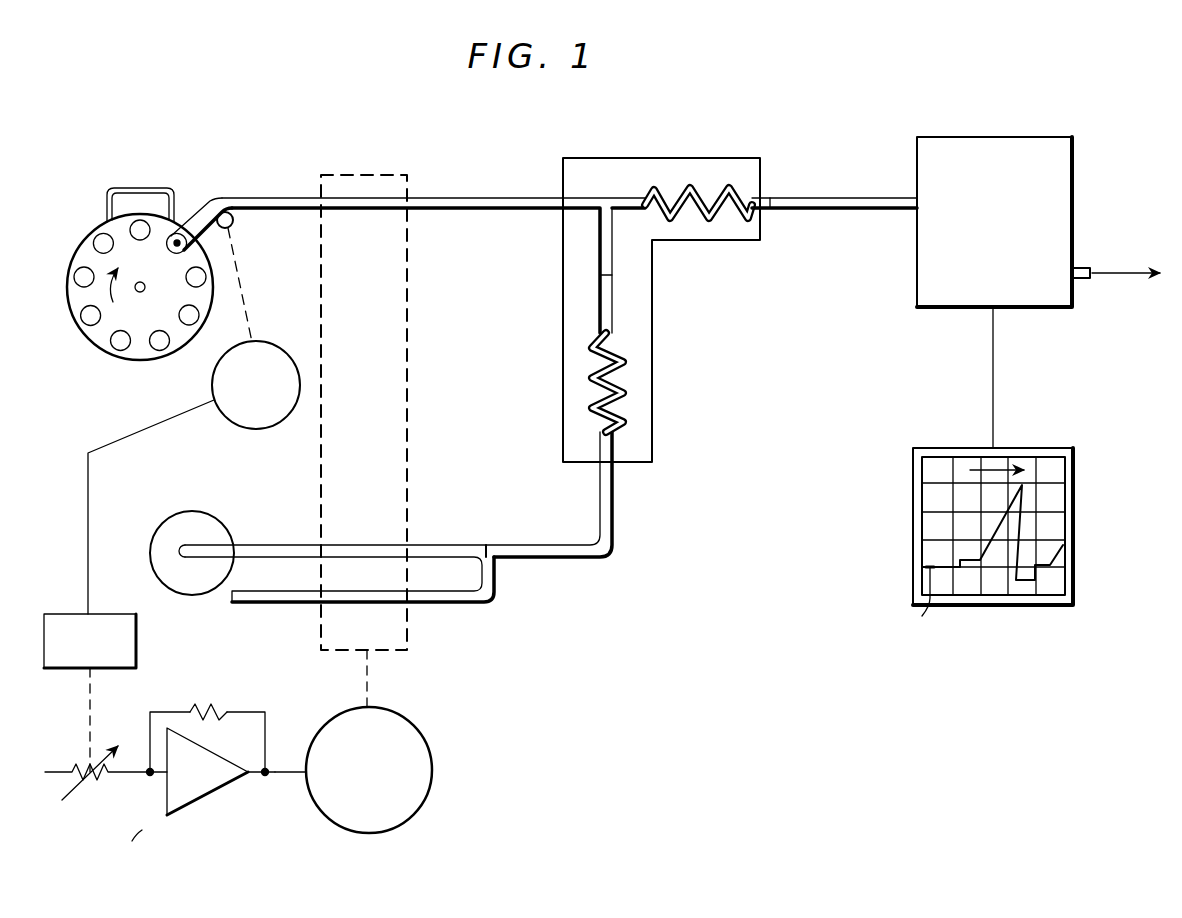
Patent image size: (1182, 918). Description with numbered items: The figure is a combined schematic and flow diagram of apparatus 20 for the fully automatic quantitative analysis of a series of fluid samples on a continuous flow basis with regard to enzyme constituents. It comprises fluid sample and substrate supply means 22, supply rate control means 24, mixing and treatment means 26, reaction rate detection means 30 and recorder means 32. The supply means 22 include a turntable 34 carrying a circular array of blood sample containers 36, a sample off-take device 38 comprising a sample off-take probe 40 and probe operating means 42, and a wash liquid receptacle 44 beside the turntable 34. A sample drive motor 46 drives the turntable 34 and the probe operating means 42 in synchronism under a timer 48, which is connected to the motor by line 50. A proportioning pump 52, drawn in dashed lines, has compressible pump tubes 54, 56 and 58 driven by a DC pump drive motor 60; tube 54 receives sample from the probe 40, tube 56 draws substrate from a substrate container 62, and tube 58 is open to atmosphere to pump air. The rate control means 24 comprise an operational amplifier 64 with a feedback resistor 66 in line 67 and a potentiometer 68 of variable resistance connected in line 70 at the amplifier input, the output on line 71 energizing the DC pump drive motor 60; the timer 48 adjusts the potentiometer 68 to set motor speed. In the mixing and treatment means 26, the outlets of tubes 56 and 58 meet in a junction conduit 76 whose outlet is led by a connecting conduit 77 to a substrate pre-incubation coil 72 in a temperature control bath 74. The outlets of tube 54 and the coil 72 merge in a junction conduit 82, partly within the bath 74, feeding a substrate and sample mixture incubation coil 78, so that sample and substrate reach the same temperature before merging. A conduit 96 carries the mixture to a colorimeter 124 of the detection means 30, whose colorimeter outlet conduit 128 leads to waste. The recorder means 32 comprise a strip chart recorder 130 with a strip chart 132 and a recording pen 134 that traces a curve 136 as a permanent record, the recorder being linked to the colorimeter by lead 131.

The apparatus 20 is at (770, 560).
The fluid sample and substrate supply means 22 is at (193, 198).
The fluid sample and substrate supply rate control means 24 is at (208, 808).
The fluid sample and substrate mixing and treatment means 26 is at (658, 155).
The reaction rate detection means 30 is at (908, 320).
The reaction rate analysis results recorder means 32 is at (1000, 615).
The turntable 34 is at (172, 366).
The blood sample containers 36 is at (214, 318).
The sample off-take device 38 is at (236, 222).
The sample off-take probe 40 is at (208, 240).
The probe operating means 42 is at (226, 210).
The wash liquid receptacle 44 is at (142, 195).
The sample drive motor 46 is at (285, 420).
The timer 48 is at (138, 651).
The line 50 is at (172, 421).
The proportioning pump 52 is at (408, 462).
The compressible pump tube 54 is at (370, 210).
The compressible pump tube 56 is at (370, 544).
The compressible pump tube 58 is at (368, 605).
The DC pump drive motor 60 is at (433, 778).
The substrate container 62 is at (218, 518).
The operational amplifier 64 is at (246, 786).
The feedback resistor 66 is at (212, 702).
The line 67 is at (267, 725).
The potentiometer 68 is at (80, 765).
The line 70 is at (152, 780).
The line 71 is at (292, 778).
The substrate pre-incubation coil 72 is at (618, 416).
The temperature control bath 74 is at (654, 348).
The junction conduit 76 is at (496, 560).
The connecting conduit 77 is at (614, 520).
The substrate and sample mixture incubation coil 78 is at (680, 186).
The junction conduit 82 is at (614, 212).
The conduit 96 is at (832, 196).
The colorimeter 124 is at (1074, 182).
The colorimeter outlet conduit 128 is at (1084, 282).
The strip chart recorder 130 is at (1074, 554).
The recorder lead 131 is at (995, 398).
The strip chart 132 is at (1024, 500).
The recording pen or stylus 134 is at (912, 607).
The curve 136 is at (990, 528).